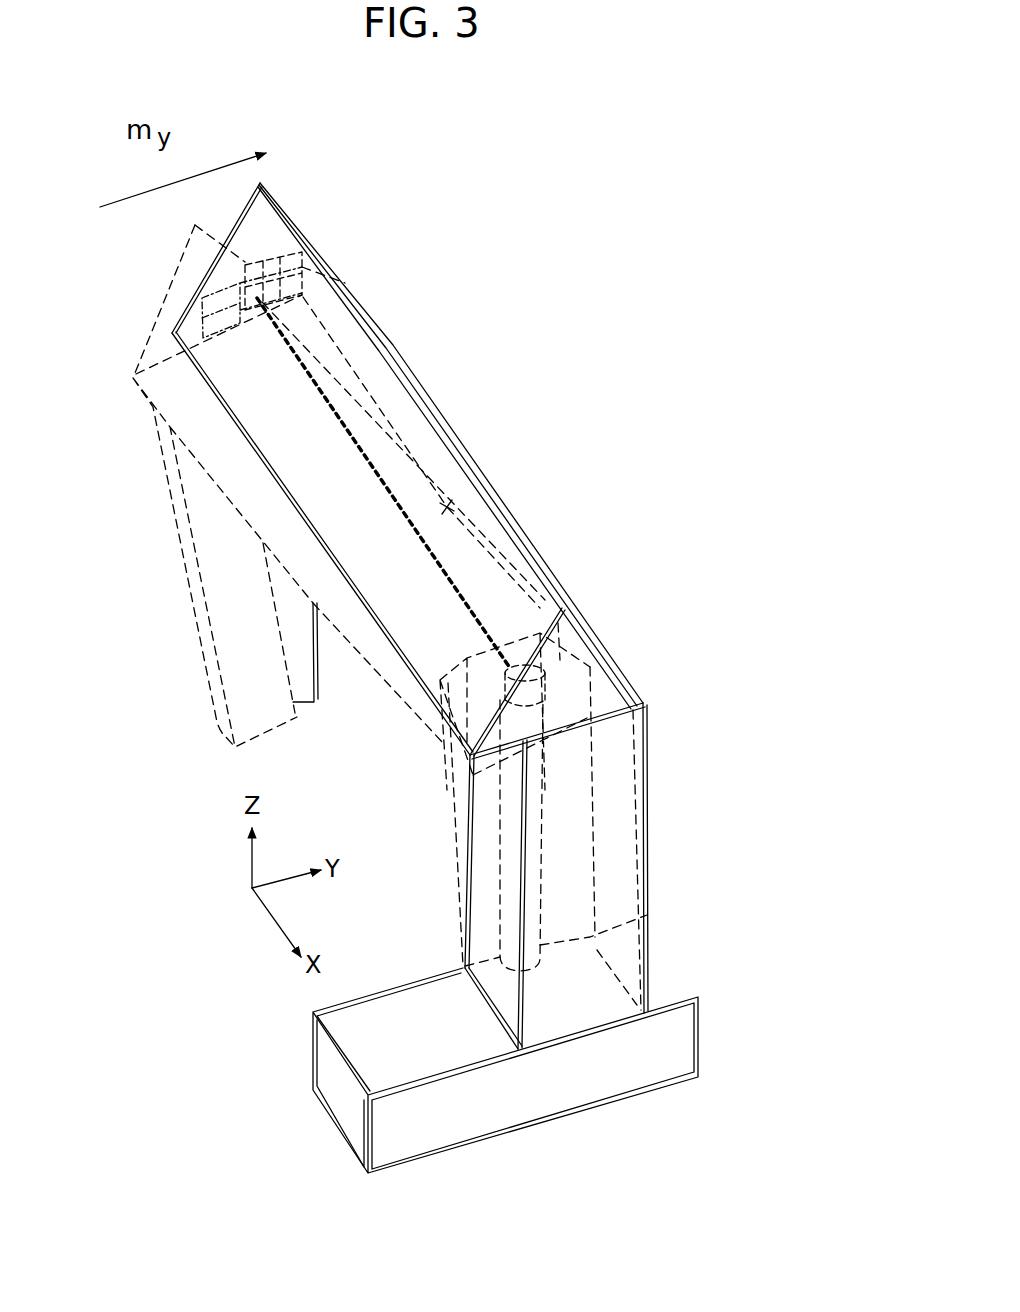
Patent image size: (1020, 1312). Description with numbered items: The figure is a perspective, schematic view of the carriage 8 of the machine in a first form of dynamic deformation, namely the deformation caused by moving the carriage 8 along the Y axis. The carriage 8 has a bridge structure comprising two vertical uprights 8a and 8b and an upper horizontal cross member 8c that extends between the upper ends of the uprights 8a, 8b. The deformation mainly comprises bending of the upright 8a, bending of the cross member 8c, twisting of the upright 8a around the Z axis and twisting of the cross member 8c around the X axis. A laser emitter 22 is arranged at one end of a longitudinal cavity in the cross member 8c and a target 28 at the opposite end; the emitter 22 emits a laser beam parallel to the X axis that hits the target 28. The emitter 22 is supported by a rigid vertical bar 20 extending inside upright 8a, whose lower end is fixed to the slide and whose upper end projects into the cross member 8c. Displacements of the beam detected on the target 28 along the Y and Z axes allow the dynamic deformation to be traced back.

The carriage 8 is at (653, 660).
The vertical upright 8a is at (607, 800).
The vertical upright 8b is at (297, 687).
The upper horizontal cross member 8c is at (490, 495).
The vertical bar 20 is at (490, 843).
The laser emitter 22 is at (561, 622).
The target 28 is at (303, 262).